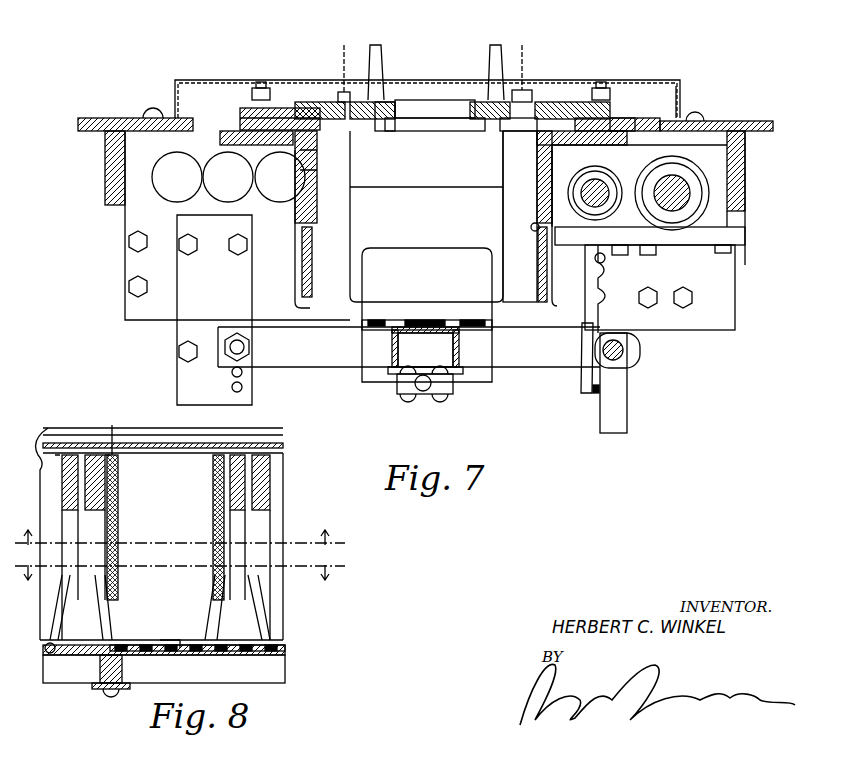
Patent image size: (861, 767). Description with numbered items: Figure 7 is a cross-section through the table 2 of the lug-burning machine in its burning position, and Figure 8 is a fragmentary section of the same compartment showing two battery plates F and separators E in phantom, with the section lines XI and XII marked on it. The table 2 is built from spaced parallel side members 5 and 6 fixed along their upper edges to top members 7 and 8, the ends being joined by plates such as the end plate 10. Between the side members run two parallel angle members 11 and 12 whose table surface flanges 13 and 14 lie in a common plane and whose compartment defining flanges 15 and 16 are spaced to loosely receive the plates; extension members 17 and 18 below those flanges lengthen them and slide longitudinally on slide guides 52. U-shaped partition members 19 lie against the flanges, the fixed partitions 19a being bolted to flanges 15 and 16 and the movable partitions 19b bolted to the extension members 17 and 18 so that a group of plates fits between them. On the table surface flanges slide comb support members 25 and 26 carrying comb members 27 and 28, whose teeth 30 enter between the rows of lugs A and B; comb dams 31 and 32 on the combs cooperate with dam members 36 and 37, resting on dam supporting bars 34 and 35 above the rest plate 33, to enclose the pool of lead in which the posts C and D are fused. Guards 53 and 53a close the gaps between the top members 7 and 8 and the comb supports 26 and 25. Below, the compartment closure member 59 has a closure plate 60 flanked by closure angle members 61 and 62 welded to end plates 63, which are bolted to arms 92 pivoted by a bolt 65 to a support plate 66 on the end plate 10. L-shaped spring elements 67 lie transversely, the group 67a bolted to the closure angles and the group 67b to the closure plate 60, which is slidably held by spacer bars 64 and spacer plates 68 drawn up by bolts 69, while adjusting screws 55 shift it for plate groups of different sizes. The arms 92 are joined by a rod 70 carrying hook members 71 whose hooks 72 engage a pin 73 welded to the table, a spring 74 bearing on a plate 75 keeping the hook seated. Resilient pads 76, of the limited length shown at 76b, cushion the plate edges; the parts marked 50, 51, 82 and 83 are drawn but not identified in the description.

In FIG. 7, the table 2 is at (231, 61).
In FIG. 7, the side member 5 is at (105, 168).
In FIG. 7, the side member 6 is at (745, 172).
In FIG. 7, the top member 7 is at (115, 118).
In FIG. 7, the top member 8 is at (745, 121).
In FIG. 7, the end plate 10 is at (145, 312).
In FIG. 7, the angle member 11 is at (305, 170).
In FIG. 7, the angle member 12 is at (537, 192).
In FIG. 7, the table surface flange 13 is at (225, 136).
In FIG. 7, the table surface flange 14 is at (627, 140).
In FIG. 7, the compartment defining flange 15 is at (307, 215).
In FIG. 7, the compartment defining flange 16 is at (531, 227).
In FIG. 8, the compartment defining flange 16 is at (283, 463).
In FIG. 7, the extension member 17 is at (312, 262).
In FIG. 7, the extension member 18 is at (538, 270).
In FIG. 8, the extension member 18 is at (283, 608).
In FIG. 7, the partition member 19 is at (366, 197).
In FIG. 8, the fixed partition member 19a is at (215, 508).
In FIG. 8, the movable partition member 19b is at (98, 490).
In FIG. 7, the comb support member 25 is at (628, 125).
In FIG. 7, the comb support member 26 is at (240, 123).
In FIG. 7, the comb member 27 is at (615, 118).
In FIG. 7, the comb member 28 is at (250, 112).
In FIG. 7, the teeth 30 is at (523, 120).
In FIG. 7, the comb dam 31 is at (558, 102).
In FIG. 7, the comb dam 32 is at (318, 102).
In FIG. 7, the rest plate 33 is at (440, 131).
In FIG. 8, the rest plate 33 is at (283, 447).
In FIG. 7, the dam supporting bar 34 is at (470, 112).
In FIG. 8, the dam supporting bar 34 is at (190, 440).
In FIG. 7, the dam supporting bar 35 is at (382, 120).
In FIG. 7, the dam member 36 is at (485, 102).
In FIG. 8, the dam member 36 is at (178, 432).
In FIG. 7, the dam member 37 is at (390, 102).
In FIG. 7, the coil 50 is at (600, 188).
In FIG. 7, the coil 51 is at (680, 185).
In FIG. 7, the slide guide 52 is at (295, 270).
In FIG. 8, the slide guide 52 is at (180, 648).
In FIG. 7, the guard 53 is at (195, 80).
In FIG. 7, the guard 53a is at (670, 82).
In FIG. 7, the adjusting screw 55 is at (420, 394).
In FIG. 7, the compartment closure member 59 is at (371, 391).
In FIG. 7, the closure plate 60 is at (425, 350).
In FIG. 8, the closure plate 60 is at (285, 652).
In FIG. 7, the closure angle member 61 is at (459, 350).
In FIG. 8, the closure angle member 61 is at (285, 678).
In FIG. 7, the closure angle member 62 is at (392, 350).
In FIG. 7, the end plate 63 is at (480, 370).
In FIG. 7, the spacer bar 64 is at (450, 330).
In FIG. 8, the spacer bar 64 is at (122, 668).
In FIG. 7, the bolt 65 is at (250, 346).
In FIG. 7, the support plate 66 is at (245, 390).
In FIG. 7, the L-shaped spring element 67 is at (427, 315).
In FIG. 8, the fixed spring element 67a is at (218, 598).
In FIG. 8, the movable spring element 67b is at (108, 582).
In FIG. 7, the spacer plate 68 is at (455, 374).
In FIG. 8, the spacer plate 68 is at (92, 688).
In FIG. 7, the bolt 69 is at (430, 388).
In FIG. 8, the bolt 69 is at (108, 696).
In FIG. 7, the rod 70 is at (623, 352).
In FIG. 7, the hook member 71 is at (627, 418).
In FIG. 7, the hook 72 is at (596, 300).
In FIG. 7, the pin 73 is at (605, 258).
In FIG. 7, the spring 74 is at (594, 394).
In FIG. 7, the plate 75 is at (582, 390).
In FIG. 7, the pad 76 is at (380, 320).
In FIG. 8, the pad length 76b is at (160, 645).
In FIG. 7, the screw 82 is at (580, 97).
In FIG. 7, the screw 83 is at (285, 97).
In FIG. 7, the arm 92 is at (308, 367).
In FIG. 7, the lug A is at (343, 70).
In FIG. 7, the lug B is at (524, 88).
In FIG. 8, the lug B is at (108, 428).
In FIG. 7, the positive battery post C is at (383, 60).
In FIG. 7, the negative battery post D is at (487, 60).
In FIG. 8, the separator E is at (118, 460).
In FIG. 8, the battery plate F is at (213, 462).
In FIG. 8, the section line XI is at (180, 579).
In FIG. 8, the section line XII is at (182, 529).